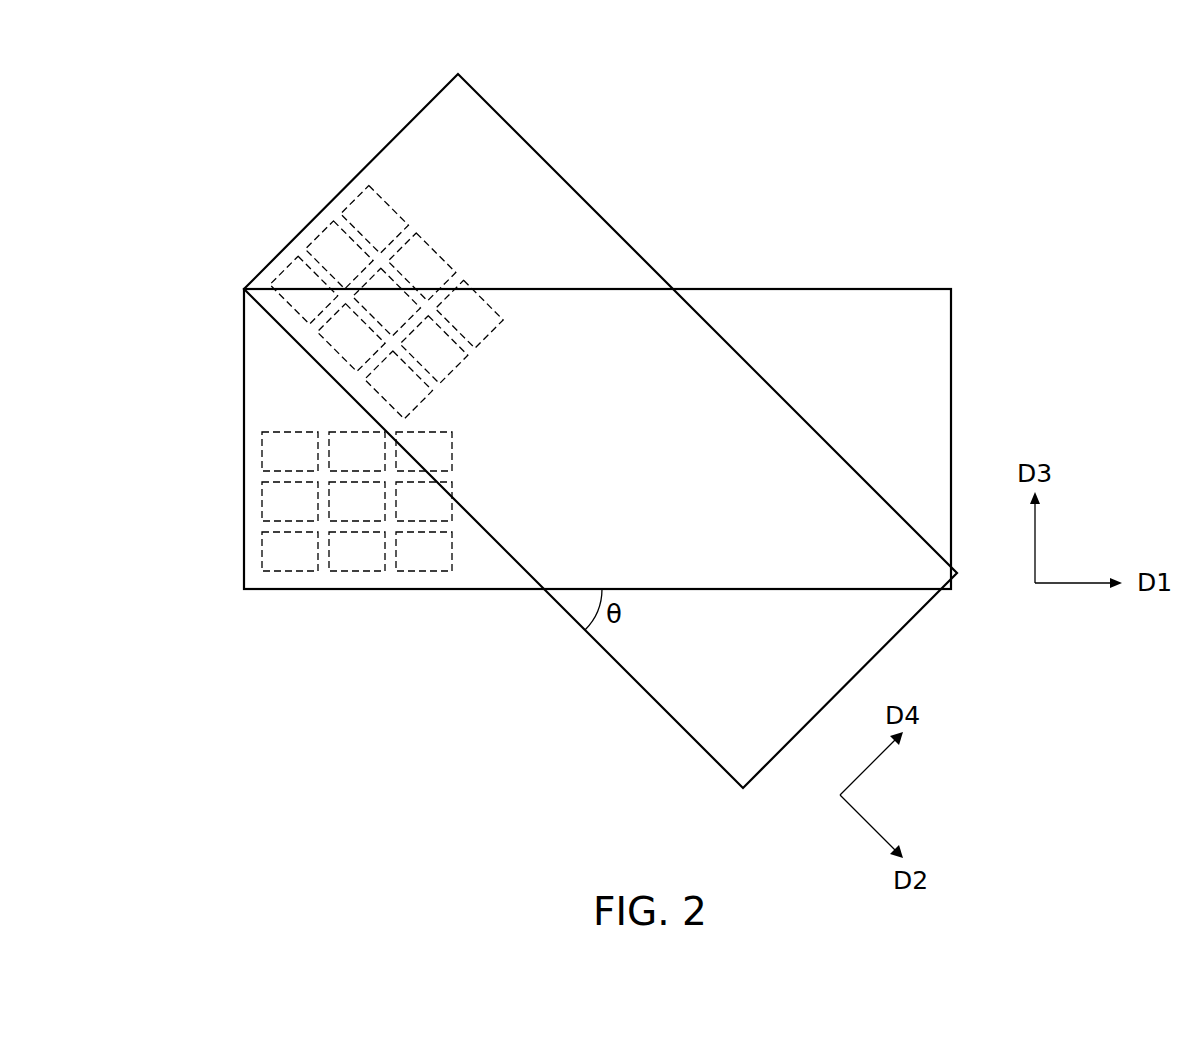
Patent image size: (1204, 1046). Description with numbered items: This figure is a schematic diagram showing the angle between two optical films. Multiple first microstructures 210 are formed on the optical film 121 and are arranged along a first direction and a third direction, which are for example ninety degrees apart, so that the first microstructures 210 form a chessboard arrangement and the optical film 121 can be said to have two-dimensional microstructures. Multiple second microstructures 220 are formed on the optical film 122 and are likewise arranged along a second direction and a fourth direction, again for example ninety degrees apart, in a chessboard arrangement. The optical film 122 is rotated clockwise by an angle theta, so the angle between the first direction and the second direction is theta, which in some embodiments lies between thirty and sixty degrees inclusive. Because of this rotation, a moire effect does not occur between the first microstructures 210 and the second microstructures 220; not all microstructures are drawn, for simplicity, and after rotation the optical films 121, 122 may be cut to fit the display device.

The optical film 121 is at (951, 343).
The optical film 122 is at (908, 622).
The first microstructures 210 is at (263, 514).
The second microstructures 220 is at (318, 240).